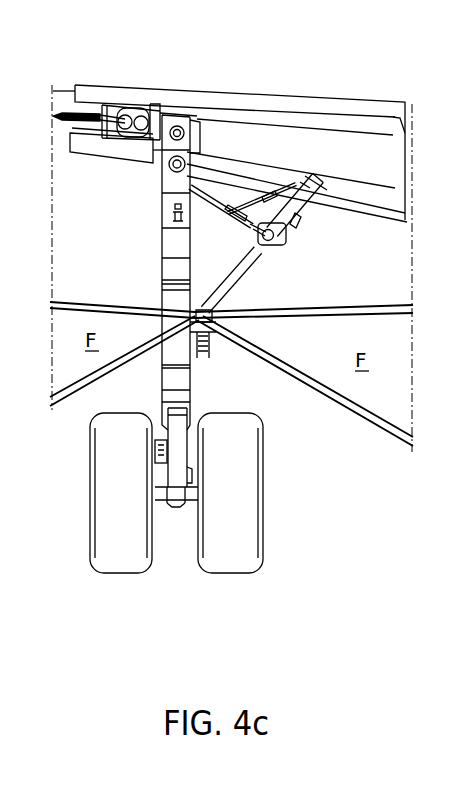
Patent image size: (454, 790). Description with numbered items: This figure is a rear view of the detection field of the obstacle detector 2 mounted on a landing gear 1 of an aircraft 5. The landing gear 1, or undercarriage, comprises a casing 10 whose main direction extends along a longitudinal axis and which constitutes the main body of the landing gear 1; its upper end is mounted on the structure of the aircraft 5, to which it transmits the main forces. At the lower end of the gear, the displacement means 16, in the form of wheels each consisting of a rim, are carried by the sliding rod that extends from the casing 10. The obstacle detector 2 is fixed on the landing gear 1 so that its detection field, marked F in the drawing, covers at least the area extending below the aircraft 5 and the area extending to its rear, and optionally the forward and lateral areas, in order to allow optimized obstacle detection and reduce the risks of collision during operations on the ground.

The landing gear 1 is at (128, 197).
The obstacle detector 2 is at (201, 300).
The aircraft 5 is at (140, 89).
The casing 10 is at (165, 242).
The displacement means 16 is at (137, 576).